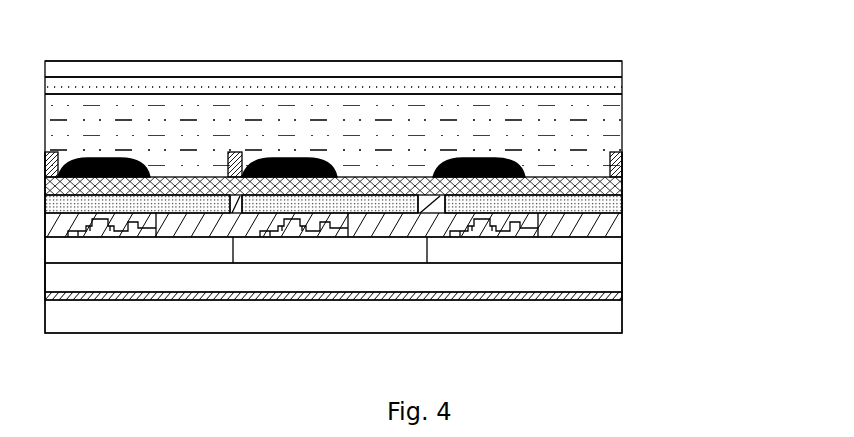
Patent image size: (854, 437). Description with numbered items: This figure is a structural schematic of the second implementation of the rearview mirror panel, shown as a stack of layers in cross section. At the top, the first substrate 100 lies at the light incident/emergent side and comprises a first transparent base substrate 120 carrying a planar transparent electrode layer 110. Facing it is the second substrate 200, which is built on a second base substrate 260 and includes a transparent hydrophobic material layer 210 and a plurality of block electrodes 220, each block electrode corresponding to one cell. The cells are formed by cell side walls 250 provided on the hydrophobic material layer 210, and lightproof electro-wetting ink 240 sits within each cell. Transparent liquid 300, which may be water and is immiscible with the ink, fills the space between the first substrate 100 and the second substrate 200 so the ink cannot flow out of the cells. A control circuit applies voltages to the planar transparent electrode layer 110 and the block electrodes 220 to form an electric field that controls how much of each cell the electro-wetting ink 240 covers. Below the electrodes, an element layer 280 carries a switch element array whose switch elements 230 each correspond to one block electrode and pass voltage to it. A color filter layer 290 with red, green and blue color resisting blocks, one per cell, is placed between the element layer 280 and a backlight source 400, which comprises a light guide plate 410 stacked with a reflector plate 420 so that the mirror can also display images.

The first substrate 100 is at (693, 47).
The planar transparent electrode layer 110 is at (617, 85).
The first transparent base substrate 120 is at (617, 68).
The second substrate 200 is at (703, 133).
The transparent hydrophobic material layer 210 is at (622, 185).
The block electrodes 220 is at (622, 205).
The switch elements 230 is at (540, 237).
The electro-wetting ink 240 is at (522, 168).
The cell side walls 250 is at (622, 165).
The second base substrate 260 is at (352, 325).
The element layer 280 is at (622, 228).
The color filter layer 290 is at (615, 248).
The transparent liquid 300 is at (333, 135).
The backlight source 400 is at (722, 283).
The light guide plate 410 is at (610, 275).
The reflector plate 420 is at (607, 298).